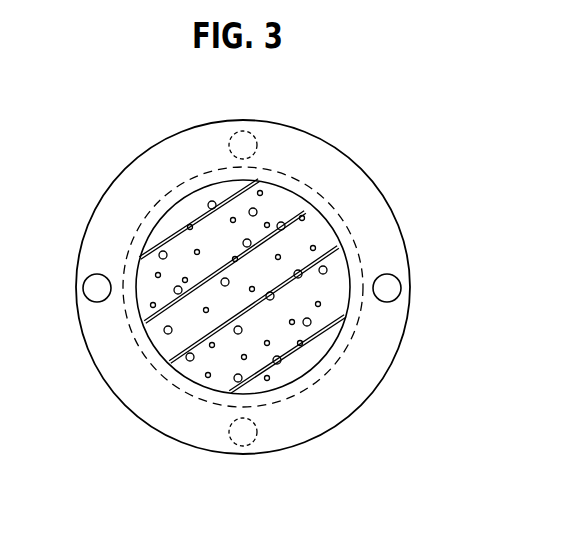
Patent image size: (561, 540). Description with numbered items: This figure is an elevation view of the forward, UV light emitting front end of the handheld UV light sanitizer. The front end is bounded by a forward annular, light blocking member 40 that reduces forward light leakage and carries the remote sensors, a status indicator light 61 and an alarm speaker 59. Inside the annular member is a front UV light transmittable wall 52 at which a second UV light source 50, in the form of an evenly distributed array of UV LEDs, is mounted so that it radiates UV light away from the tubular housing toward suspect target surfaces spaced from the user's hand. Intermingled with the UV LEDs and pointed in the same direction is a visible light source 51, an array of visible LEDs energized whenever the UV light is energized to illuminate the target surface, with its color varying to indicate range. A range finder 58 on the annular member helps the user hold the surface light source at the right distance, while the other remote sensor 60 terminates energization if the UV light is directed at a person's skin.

The forward annular light blocking member 40 is at (358, 390).
The UV light source 50 is at (280, 254).
The visible light source 51 is at (314, 245).
The front UV light transmittable wall 52 is at (304, 219).
The range finder 58 is at (88, 281).
The alarm speaker 59 is at (253, 437).
The remote sensor 60 is at (398, 282).
The status indicator light 61 is at (246, 131).